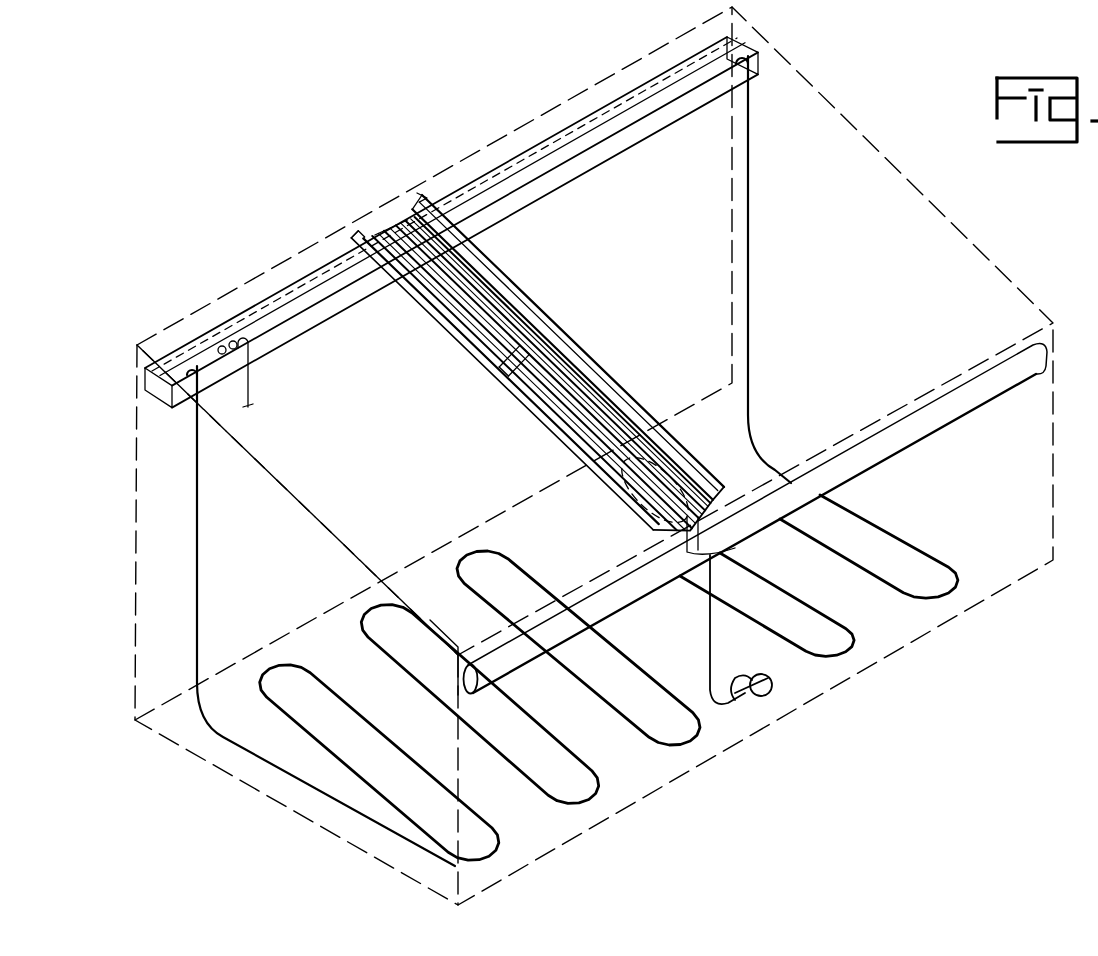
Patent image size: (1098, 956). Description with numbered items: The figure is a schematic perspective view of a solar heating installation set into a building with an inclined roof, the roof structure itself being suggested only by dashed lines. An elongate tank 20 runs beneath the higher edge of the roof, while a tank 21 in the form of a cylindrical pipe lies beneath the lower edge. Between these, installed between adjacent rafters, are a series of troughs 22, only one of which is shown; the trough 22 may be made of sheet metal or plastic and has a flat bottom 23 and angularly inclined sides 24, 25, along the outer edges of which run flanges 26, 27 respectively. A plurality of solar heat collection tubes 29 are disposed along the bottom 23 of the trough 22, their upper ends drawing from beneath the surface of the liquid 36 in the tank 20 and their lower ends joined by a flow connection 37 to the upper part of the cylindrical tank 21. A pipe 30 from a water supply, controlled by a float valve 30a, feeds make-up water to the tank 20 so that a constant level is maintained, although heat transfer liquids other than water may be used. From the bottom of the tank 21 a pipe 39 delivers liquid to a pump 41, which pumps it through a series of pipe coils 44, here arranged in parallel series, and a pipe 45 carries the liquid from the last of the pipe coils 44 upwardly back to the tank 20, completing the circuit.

The elongate tank 20 is at (613, 157).
The tank 21 is at (965, 412).
The trough 22 is at (513, 339).
The flat bottom 23 is at (398, 222).
The angularly inclined side 24 is at (372, 236).
The angularly inclined side 25 is at (411, 206).
The flange 26 is at (455, 329).
The flange 27 is at (500, 279).
The solar heat collection tube 29 is at (524, 378).
The pipe 30 is at (250, 385).
The float valve 30a is at (230, 350).
The liquid 36 is at (274, 300).
The flow connection 37 is at (700, 543).
The pipe 39 is at (712, 597).
The pump 41 is at (773, 687).
The pipe coil 44 is at (875, 527).
The pipe 45 is at (750, 262).